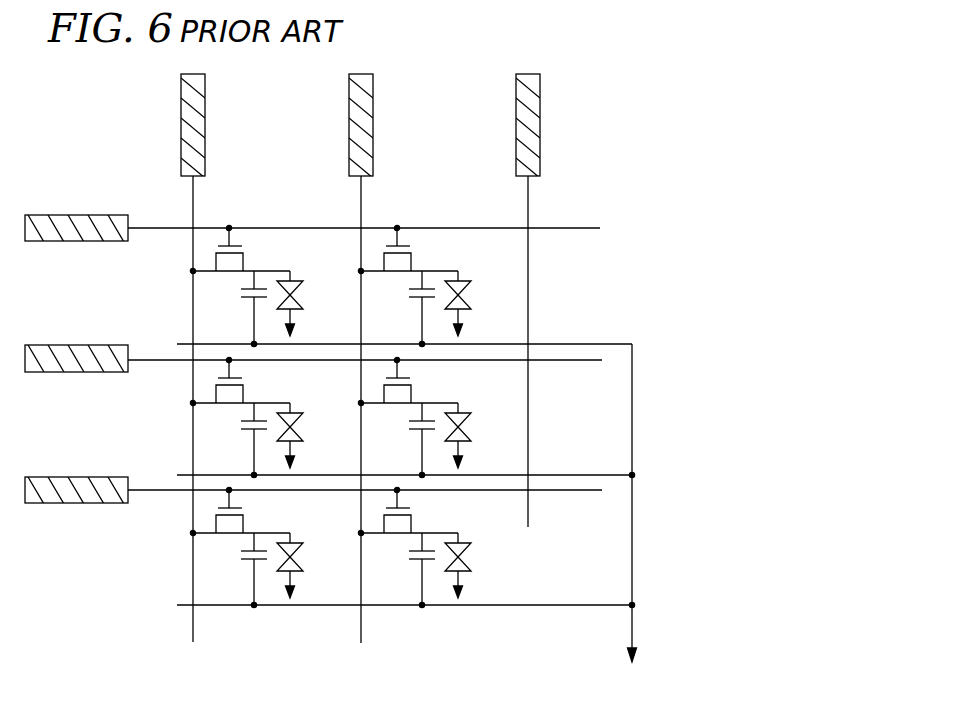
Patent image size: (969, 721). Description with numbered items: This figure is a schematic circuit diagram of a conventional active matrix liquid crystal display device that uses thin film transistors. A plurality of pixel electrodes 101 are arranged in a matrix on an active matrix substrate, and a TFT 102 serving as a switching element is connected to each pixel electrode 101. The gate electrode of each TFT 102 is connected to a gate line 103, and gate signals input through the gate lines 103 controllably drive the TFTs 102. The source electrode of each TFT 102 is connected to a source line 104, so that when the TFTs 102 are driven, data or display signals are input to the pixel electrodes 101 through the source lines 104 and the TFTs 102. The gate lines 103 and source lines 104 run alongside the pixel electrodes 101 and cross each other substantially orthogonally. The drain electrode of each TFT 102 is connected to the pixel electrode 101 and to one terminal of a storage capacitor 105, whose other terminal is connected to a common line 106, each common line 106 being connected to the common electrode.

The pixel electrode 101 is at (466, 282).
The TFT 102 is at (408, 244).
The gate line 103 is at (594, 228).
The source line 104 is at (361, 203).
The storage capacitor 105 is at (436, 290).
The common line 106 is at (603, 344).